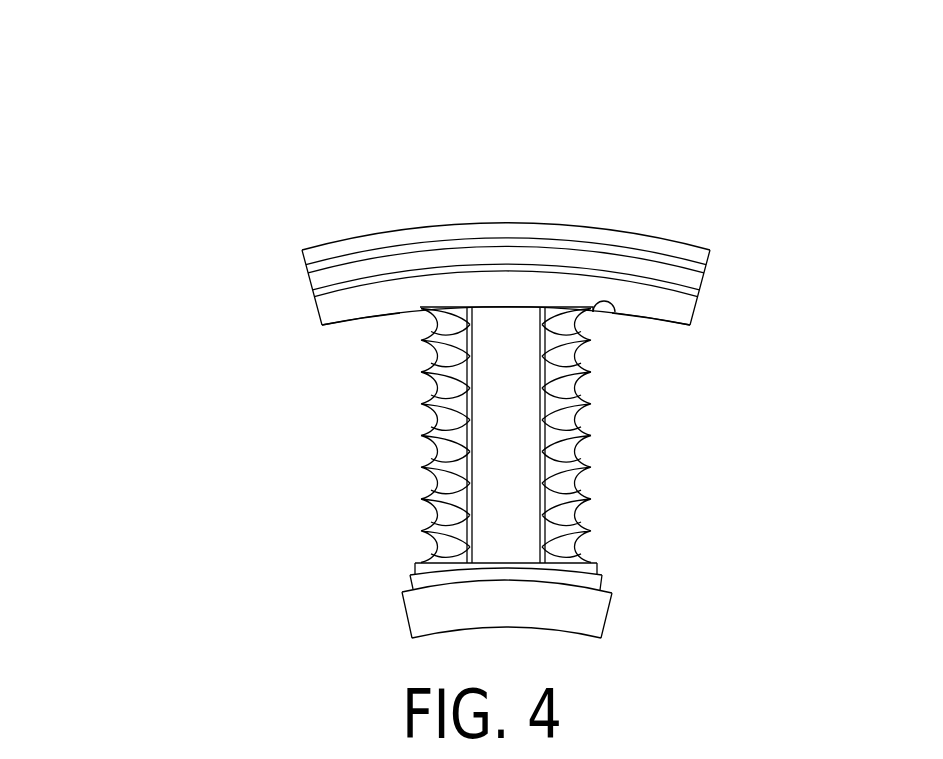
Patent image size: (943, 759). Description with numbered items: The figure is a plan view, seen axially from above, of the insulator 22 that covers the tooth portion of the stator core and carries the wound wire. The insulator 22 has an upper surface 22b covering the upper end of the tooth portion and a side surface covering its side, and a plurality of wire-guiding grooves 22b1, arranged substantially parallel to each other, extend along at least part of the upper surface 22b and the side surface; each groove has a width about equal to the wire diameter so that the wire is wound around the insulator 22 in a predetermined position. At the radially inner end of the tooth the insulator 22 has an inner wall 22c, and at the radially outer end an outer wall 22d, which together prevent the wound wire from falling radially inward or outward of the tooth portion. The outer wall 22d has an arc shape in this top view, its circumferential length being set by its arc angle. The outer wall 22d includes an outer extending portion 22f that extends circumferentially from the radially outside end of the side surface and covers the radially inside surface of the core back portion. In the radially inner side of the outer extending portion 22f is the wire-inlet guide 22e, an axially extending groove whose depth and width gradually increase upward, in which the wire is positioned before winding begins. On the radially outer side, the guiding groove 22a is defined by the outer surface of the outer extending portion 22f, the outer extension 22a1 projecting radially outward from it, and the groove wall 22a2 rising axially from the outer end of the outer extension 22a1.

The insulator 22 is at (173, 65).
The guiding groove 22a is at (687, 278).
The outer extension 22a1 is at (355, 247).
The groove wall 22a2 is at (705, 284).
The upper surface 22b is at (515, 345).
The wire-guiding grooves 22b1 is at (440, 426).
The inner wall 22c is at (448, 612).
The outer wall 22d is at (360, 303).
The wire-inlet guide 22e is at (610, 313).
The outer extending portion 22f is at (372, 320).